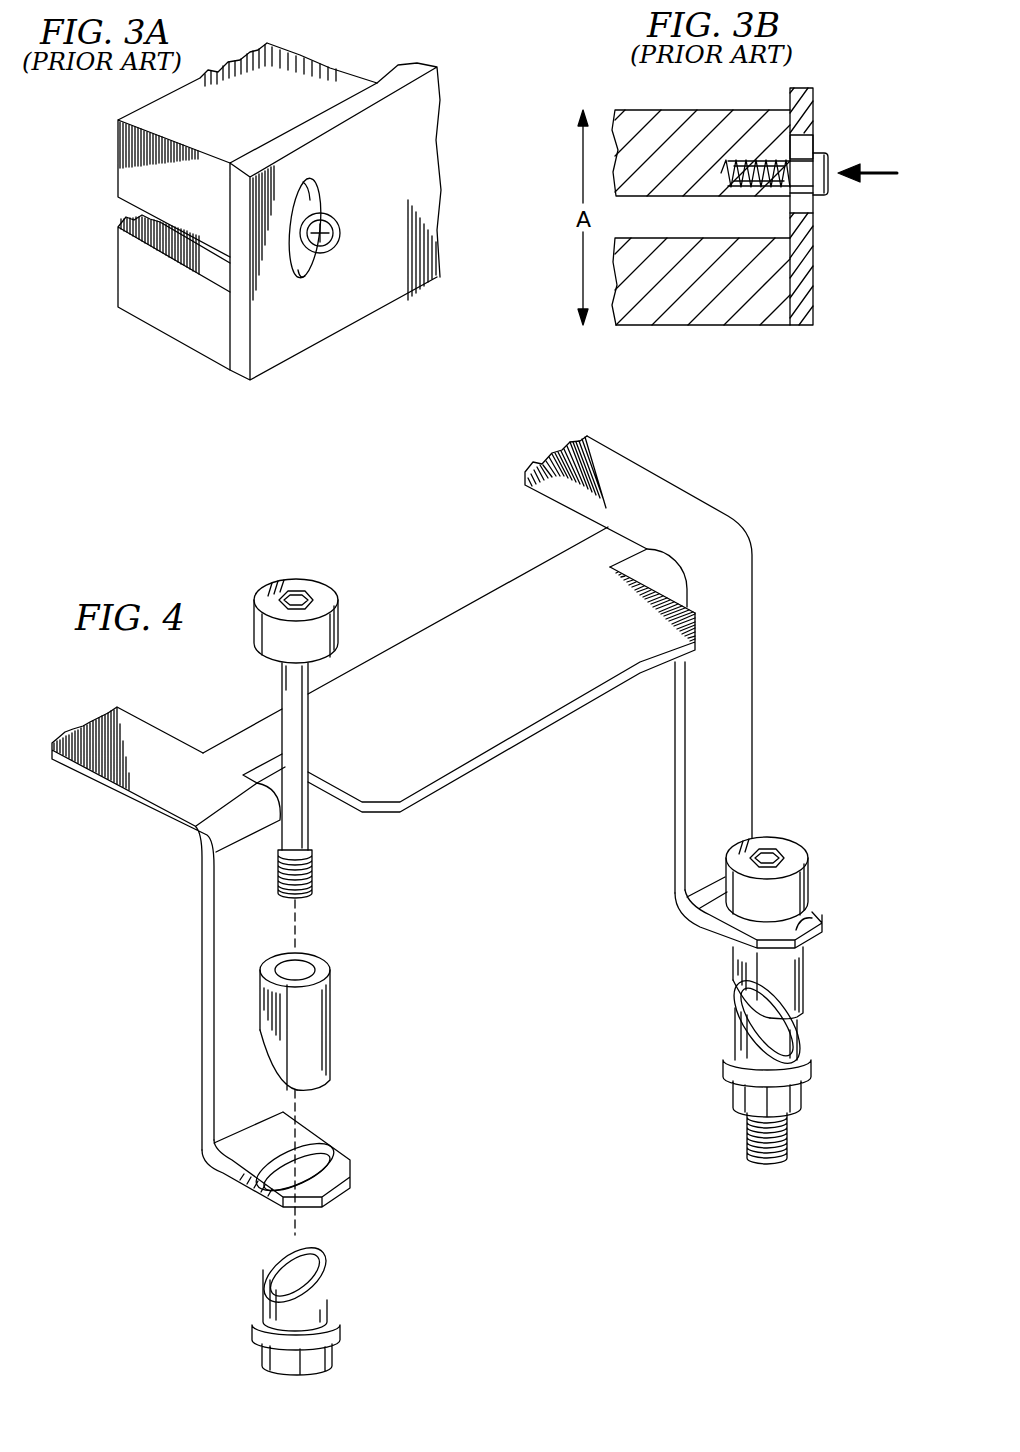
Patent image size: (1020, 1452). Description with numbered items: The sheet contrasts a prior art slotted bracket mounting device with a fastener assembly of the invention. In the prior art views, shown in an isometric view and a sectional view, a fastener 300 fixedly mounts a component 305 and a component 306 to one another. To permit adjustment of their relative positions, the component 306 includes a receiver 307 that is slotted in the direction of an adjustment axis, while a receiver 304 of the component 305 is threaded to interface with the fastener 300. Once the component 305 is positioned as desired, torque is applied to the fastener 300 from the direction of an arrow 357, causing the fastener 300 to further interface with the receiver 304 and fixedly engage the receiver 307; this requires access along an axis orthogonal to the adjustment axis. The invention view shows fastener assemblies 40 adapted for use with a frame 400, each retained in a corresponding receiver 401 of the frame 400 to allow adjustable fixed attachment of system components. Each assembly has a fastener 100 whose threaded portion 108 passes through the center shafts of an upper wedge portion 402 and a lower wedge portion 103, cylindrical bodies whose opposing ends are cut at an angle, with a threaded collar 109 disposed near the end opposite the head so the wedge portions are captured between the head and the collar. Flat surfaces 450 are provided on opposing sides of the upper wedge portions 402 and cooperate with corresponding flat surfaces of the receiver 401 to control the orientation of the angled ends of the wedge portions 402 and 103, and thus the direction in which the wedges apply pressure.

In FIG. 3A, the fastener 300 is at (331, 243).
In FIG. 3B, the fastener 300 is at (830, 164).
In FIG. 3B, the receiver 304 is at (727, 167).
In FIG. 3A, the component 305 is at (250, 124).
In FIG. 3B, the component 305 is at (703, 190).
In FIG. 3A, the component 306 is at (195, 333).
In FIG. 3B, the component 306 is at (740, 318).
In FIG. 3A, the receiver 307 is at (320, 202).
In FIG. 3B, the receiver 307 is at (806, 145).
In FIG. 3B, the arrow 357 is at (873, 178).
In FIG. 4, the fastener assemblies 40 is at (265, 545).
In FIG. 4, the fastener 100 is at (312, 733).
In FIG. 4, the threaded portion 108 is at (787, 1138).
In FIG. 4, the wedge portion 103 is at (258, 1292).
In FIG. 4, the threaded collar 109 is at (250, 1338).
In FIG. 4, the frame 400 is at (153, 735).
In FIG. 4, the receivers 401 is at (317, 1160).
In FIG. 4, the upper wedge portions 402 is at (330, 1008).
In FIG. 4, the flat surfaces 450 is at (275, 1043).